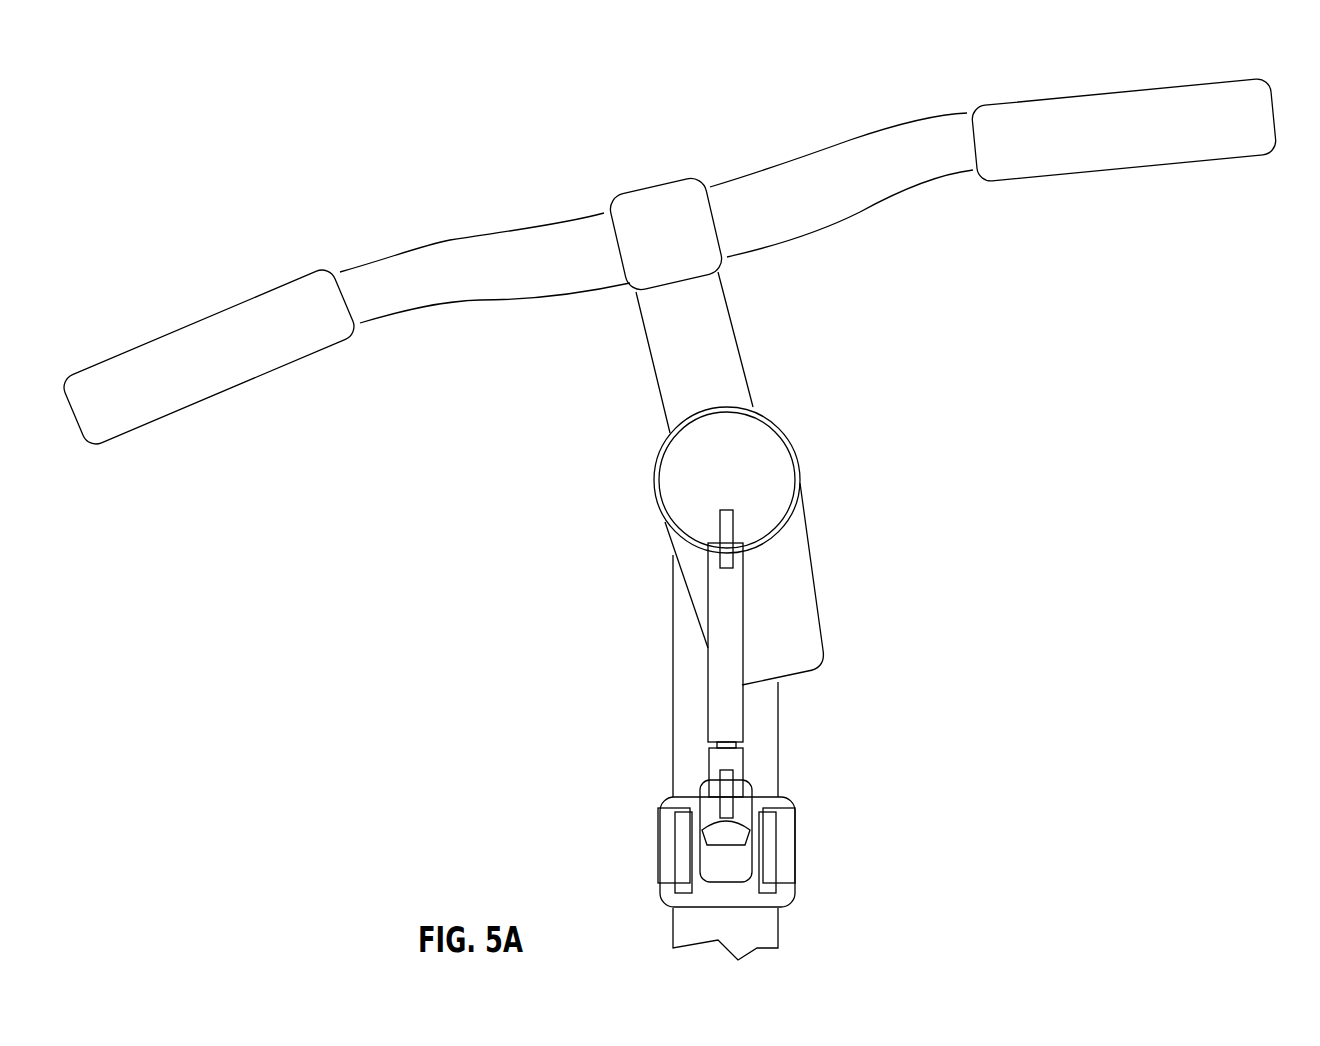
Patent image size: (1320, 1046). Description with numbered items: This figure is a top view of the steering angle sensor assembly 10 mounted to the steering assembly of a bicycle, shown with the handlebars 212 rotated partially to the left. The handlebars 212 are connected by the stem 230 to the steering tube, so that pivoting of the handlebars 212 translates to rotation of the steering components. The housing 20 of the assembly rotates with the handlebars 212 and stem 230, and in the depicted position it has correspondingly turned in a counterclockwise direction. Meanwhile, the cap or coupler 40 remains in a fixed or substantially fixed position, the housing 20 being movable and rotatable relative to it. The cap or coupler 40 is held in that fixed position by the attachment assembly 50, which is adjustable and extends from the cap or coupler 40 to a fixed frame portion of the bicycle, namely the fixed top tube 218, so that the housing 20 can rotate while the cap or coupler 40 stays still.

The steering angle sensor assembly 10 is at (620, 553).
The handlebars 212 is at (507, 255).
The stem 230 is at (707, 365).
The cap or coupler 40 is at (757, 462).
The housing 20 is at (790, 606).
The attachment assembly 50 is at (684, 694).
The fixed top tube 218 is at (685, 771).